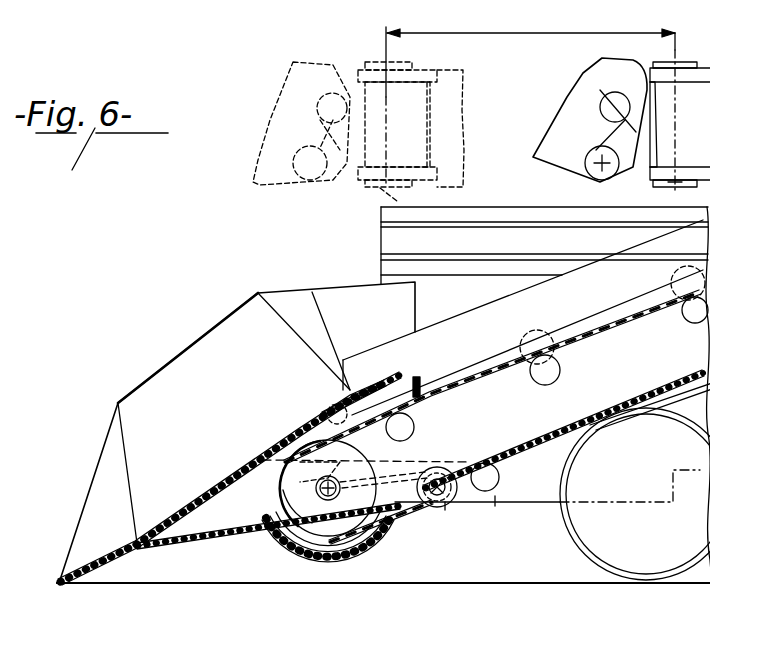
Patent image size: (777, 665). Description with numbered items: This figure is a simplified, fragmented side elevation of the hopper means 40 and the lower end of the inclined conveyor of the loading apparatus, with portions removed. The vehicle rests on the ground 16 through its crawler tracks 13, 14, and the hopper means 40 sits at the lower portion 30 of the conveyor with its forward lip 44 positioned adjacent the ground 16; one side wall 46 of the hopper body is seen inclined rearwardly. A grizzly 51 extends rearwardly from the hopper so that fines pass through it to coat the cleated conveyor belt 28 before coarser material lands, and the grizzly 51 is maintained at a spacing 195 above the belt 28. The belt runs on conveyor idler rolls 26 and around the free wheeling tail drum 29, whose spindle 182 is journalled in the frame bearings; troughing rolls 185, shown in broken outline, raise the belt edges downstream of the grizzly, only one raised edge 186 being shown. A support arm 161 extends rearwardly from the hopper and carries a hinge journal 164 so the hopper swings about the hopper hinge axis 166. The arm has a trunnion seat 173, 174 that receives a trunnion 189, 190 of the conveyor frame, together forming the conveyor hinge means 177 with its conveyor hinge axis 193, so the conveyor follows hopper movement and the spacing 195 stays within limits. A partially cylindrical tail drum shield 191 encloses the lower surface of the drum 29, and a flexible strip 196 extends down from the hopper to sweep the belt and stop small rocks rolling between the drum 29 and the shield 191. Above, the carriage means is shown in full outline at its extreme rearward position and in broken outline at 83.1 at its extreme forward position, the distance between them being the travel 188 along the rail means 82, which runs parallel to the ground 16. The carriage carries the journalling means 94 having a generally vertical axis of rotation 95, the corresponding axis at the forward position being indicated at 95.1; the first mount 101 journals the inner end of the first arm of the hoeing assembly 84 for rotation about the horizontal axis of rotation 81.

The travel 188 is at (497, 33).
The phantom roller axis 95.1 is at (383, 44).
The carriage means in extreme forward position 83.1 is at (436, 62).
The hoeing assembly 84 is at (590, 72).
The vertical axis of rotation 95 is at (680, 46).
The first mount 101 is at (604, 130).
The horizontal axis of rotation 81 is at (586, 157).
The rail means 82 is at (530, 236).
The journalling means 94 is at (653, 155).
The troughing rolls 185 is at (675, 271).
The raised edge 186 is at (608, 303).
The conveyor idler rolls 26 is at (690, 324).
The cleated conveyor belt 28 is at (608, 342).
The side wall 46 is at (212, 347).
The grizzly 51 is at (396, 372).
The spacing 195 is at (420, 384).
The flexible strip 196 is at (322, 407).
The conveyor hinge axis 193 is at (262, 458).
The tail drum 29 is at (353, 449).
The support arm 161 is at (438, 468).
The hinge journal 164 is at (435, 472).
The spindle 182 is at (316, 490).
The conveyor hinge means 177 is at (292, 506).
The hopper hinge axis 166 is at (450, 514).
The trunnion seat 173 is at (396, 526).
The trunnion seat 174 is at (403, 522).
The trunnion 189 is at (262, 544).
The trunnion 190 is at (268, 534).
The lower portion 30 is at (378, 553).
The tail drum shield 191 is at (348, 563).
The ground 16 is at (462, 583).
The crawler track 13 is at (576, 549).
The crawler track 14 is at (619, 494).
The forward lip 44 is at (62, 568).
The hopper means 40 is at (150, 572).